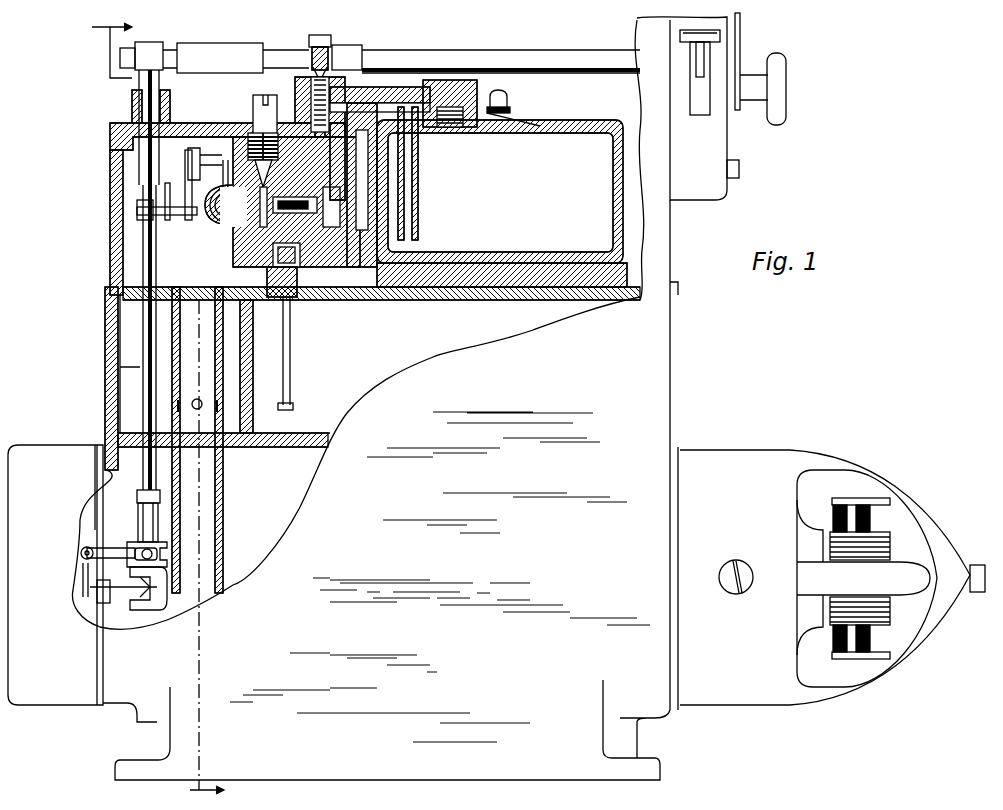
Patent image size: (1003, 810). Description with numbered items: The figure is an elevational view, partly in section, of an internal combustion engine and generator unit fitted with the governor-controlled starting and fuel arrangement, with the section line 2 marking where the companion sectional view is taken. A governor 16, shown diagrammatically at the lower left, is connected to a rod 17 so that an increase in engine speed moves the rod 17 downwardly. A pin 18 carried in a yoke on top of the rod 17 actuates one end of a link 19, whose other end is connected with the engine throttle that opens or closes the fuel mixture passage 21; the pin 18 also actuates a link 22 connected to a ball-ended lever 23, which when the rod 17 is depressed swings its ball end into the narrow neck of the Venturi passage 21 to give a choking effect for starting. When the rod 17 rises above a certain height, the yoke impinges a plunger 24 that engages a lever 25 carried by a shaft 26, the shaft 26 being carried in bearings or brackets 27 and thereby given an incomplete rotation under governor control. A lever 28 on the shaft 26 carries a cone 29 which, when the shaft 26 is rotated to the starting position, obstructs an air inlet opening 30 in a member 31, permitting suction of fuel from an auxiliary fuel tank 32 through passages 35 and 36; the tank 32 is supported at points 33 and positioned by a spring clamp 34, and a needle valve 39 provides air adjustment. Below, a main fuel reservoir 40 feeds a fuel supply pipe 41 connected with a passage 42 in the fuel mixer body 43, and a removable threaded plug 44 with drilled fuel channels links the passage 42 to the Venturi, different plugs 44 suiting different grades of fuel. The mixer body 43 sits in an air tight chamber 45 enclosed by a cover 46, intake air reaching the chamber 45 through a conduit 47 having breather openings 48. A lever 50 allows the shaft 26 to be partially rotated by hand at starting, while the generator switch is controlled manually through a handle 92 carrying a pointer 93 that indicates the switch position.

The section line 2 is at (164, 410).
The governor 16 is at (147, 610).
The rod 17 is at (140, 478).
The pin 18 is at (137, 210).
The link 19 is at (170, 225).
The fuel mixture passage 21 is at (222, 226).
The link 22 is at (189, 228).
The ball-ended lever 23 is at (205, 163).
The plunger 24 is at (140, 170).
The lever 25 is at (155, 46).
The governor actuated shaft 26 is at (480, 52).
The bearings or brackets 27 is at (218, 46).
The lever 28 is at (357, 48).
The cone 29 is at (310, 60).
The opening 30 is at (295, 90).
The member 31 is at (392, 92).
The auxiliary fuel tank 32 is at (502, 203).
The supporting points 33 is at (630, 262).
The spring clamp 34 is at (508, 95).
The passage 35 is at (418, 162).
The passage 36 is at (375, 122).
The needle valve 39 is at (282, 181).
The main fuel reservoir 40 is at (343, 340).
The fuel supply pipe 41 is at (291, 365).
The passage 42 is at (300, 258).
The fuel mixer body 43 is at (270, 258).
The removable threaded plug 44 is at (312, 213).
The air tight chamber 45 is at (110, 152).
The cover 46 is at (110, 130).
The conduit 47 is at (208, 520).
The breather openings 48 is at (192, 406).
The lever 50 is at (680, 36).
The handle 92 is at (786, 110).
The pointer 93 is at (740, 32).